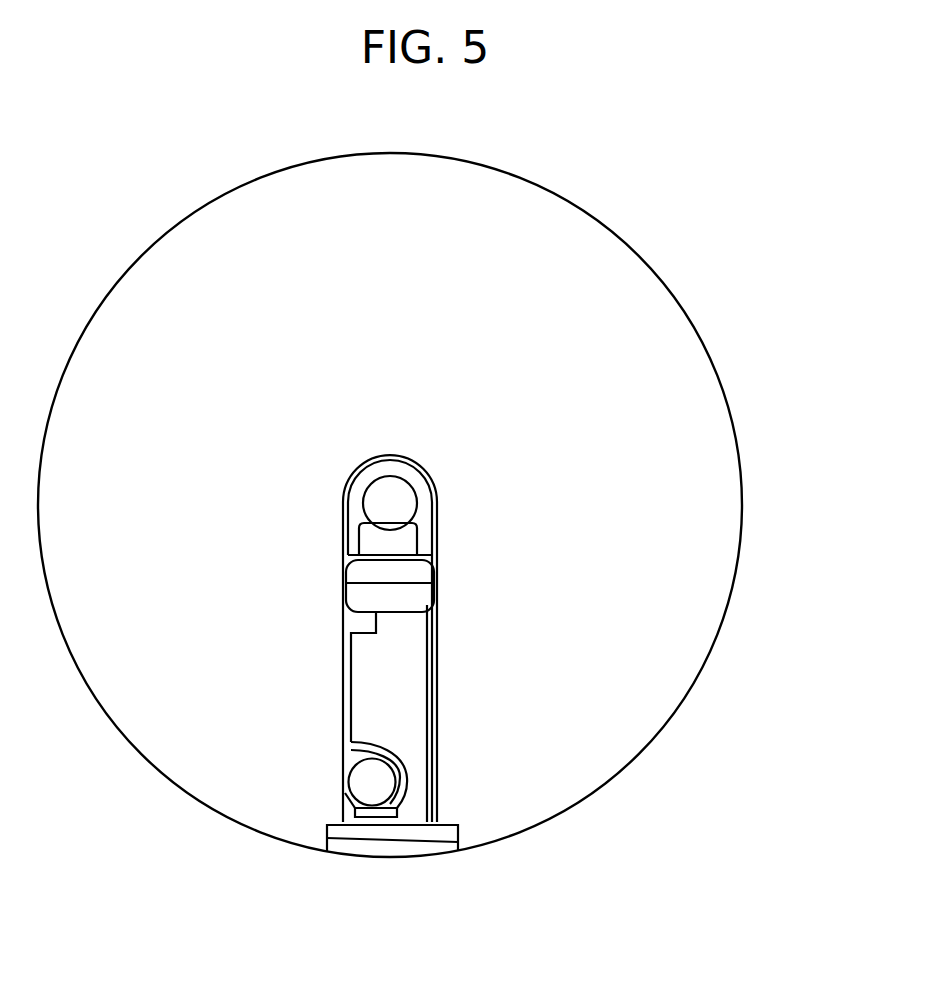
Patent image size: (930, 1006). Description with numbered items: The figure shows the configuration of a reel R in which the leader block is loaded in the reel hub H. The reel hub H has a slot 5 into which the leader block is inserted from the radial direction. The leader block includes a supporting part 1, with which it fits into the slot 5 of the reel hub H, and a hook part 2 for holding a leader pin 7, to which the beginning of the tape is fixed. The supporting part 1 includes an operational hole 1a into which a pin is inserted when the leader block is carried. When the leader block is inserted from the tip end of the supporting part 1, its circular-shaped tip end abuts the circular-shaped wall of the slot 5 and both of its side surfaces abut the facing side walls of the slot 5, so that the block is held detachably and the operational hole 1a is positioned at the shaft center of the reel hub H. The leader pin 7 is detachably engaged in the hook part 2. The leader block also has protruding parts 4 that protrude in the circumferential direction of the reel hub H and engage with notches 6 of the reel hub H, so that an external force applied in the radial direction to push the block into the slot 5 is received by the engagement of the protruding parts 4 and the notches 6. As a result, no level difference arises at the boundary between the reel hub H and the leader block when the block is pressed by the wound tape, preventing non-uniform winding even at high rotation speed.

The reel R is at (737, 395).
The reel hub H is at (705, 540).
The slot 5 is at (438, 652).
The operational hole 1a is at (410, 502).
The supporting part 1 is at (416, 576).
The hook part 2 is at (408, 786).
The leader pin 7 is at (377, 795).
The protruding parts 4 is at (347, 836).
The notches 6 is at (328, 829).